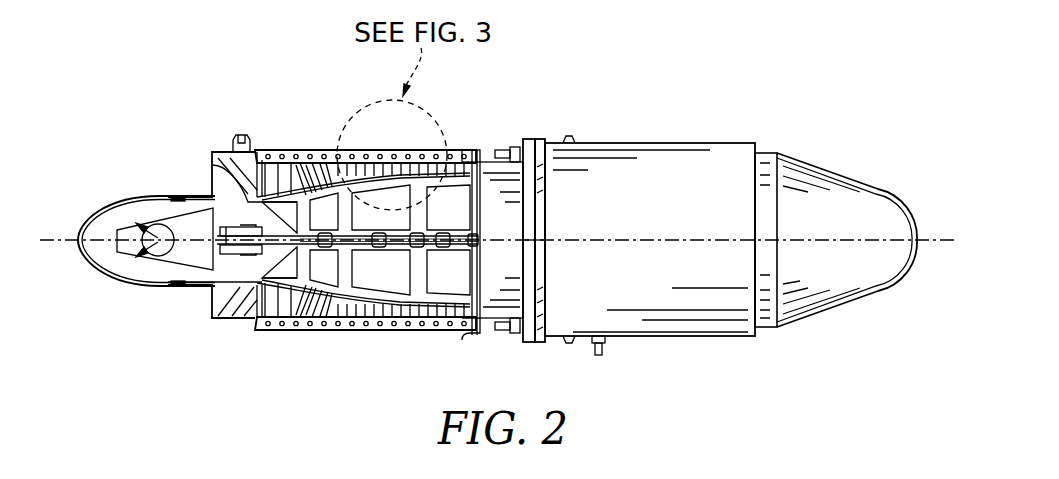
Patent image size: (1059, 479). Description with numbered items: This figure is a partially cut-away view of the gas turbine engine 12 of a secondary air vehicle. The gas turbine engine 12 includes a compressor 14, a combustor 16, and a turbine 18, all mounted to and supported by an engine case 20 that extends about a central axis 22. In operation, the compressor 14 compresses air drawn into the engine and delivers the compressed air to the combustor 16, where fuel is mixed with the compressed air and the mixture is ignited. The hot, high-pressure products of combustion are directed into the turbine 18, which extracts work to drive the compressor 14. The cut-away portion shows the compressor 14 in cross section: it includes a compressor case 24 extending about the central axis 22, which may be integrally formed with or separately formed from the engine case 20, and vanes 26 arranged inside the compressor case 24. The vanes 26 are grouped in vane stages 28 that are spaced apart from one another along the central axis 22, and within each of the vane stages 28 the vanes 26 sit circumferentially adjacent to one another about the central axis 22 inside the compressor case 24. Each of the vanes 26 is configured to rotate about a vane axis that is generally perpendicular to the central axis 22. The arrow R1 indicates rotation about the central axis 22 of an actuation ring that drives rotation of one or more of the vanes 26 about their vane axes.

The gas turbine engine 12 is at (632, 118).
The compressor 14 is at (426, 146).
The combustor 16 is at (563, 216).
The turbine 18 is at (699, 216).
The engine case 20 is at (677, 136).
The central axis 22 is at (80, 252).
The compressor case 24 is at (343, 150).
The vanes 26 is at (303, 170).
The vane stages 28 is at (302, 308).
The arrow indicating rotation of the actuation ring R1 is at (158, 258).